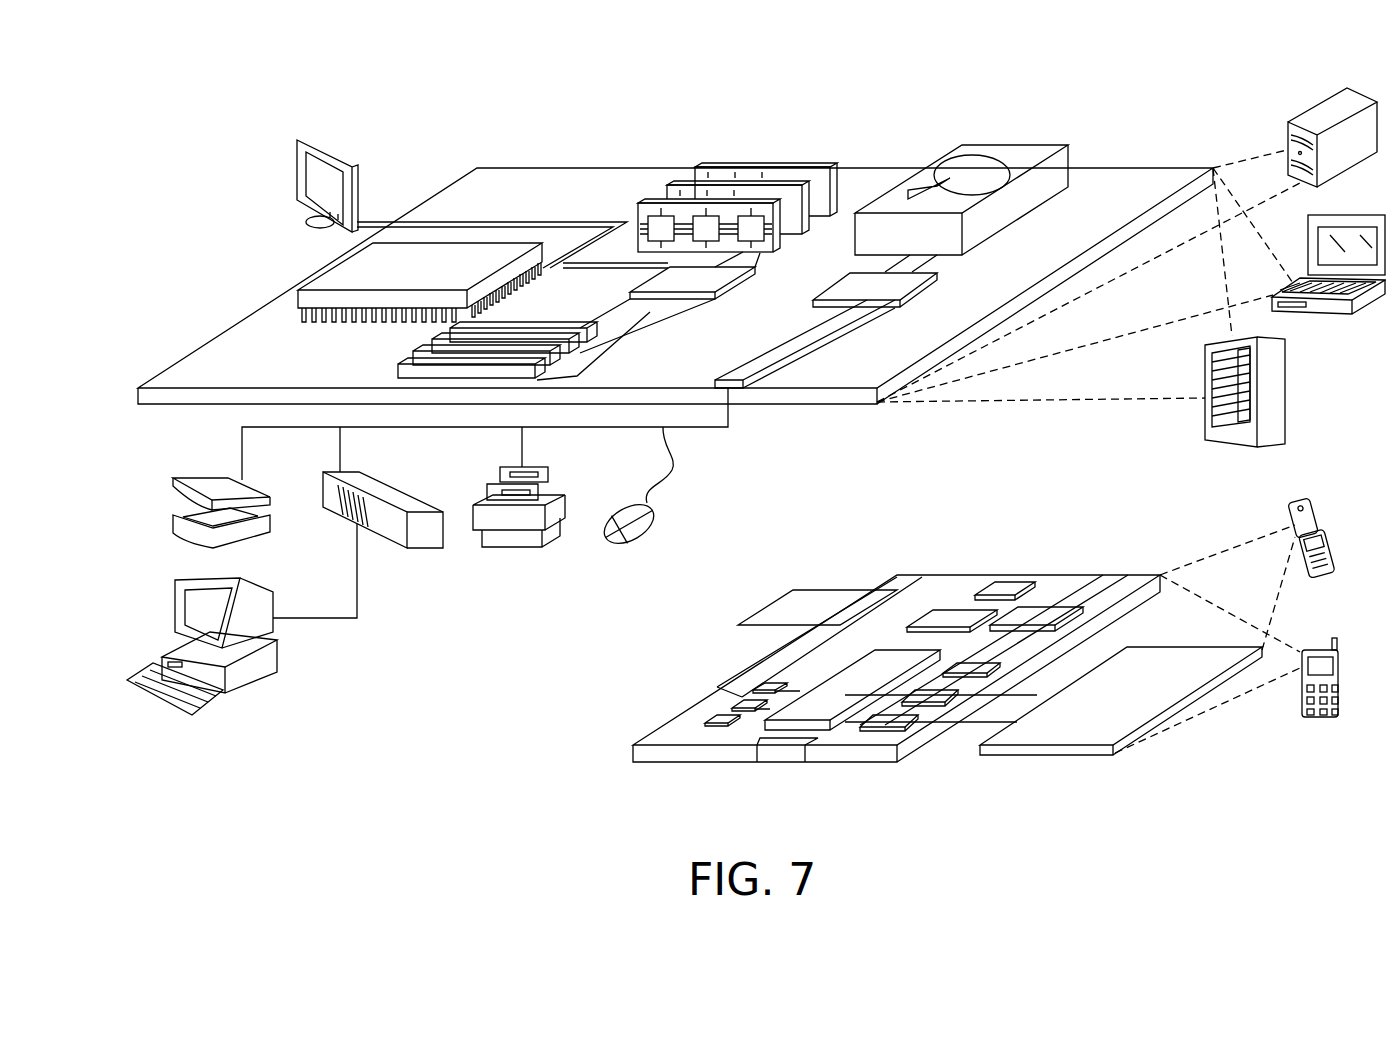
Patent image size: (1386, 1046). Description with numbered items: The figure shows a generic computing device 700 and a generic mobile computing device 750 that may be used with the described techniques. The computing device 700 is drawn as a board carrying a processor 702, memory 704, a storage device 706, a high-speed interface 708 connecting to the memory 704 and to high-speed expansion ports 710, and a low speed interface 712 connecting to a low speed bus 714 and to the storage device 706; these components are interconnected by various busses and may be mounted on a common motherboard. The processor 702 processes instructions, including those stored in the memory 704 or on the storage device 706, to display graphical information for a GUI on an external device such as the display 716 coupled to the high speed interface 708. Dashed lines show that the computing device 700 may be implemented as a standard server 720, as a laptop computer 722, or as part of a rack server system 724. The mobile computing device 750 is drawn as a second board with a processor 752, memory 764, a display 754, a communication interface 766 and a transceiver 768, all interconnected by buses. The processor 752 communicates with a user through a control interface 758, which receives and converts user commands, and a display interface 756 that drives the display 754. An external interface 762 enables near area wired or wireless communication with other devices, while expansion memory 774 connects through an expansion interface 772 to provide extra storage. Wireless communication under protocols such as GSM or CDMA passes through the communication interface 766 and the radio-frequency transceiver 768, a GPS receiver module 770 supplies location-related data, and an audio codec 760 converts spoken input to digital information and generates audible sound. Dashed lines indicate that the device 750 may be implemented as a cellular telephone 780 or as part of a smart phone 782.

The computing device 700 is at (432, 120).
The processor 702 is at (325, 274).
The memory 704 is at (772, 160).
The storage device 706 is at (1003, 146).
The high-speed interface 708 is at (705, 276).
The high-speed expansion ports 710 is at (425, 351).
The low speed interface 712 is at (845, 284).
The low speed bus 714 is at (735, 379).
The display 716 is at (298, 136).
The standard server 720 is at (1310, 113).
The laptop computer 722 is at (1365, 216).
The rack server system 724 is at (1285, 392).
The mobile computing device 750 is at (592, 767).
The processor 752 is at (820, 696).
The display 754 is at (1160, 660).
The display interface 756 is at (910, 721).
The control interface 758 is at (937, 693).
The audio codec 760 is at (977, 665).
The external interface 762 is at (783, 748).
The memory 764 is at (735, 703).
The communication interface 766 is at (953, 608).
The transceiver 768 is at (1045, 608).
The GPS receiver module 770 is at (1007, 583).
The expansion interface 772 is at (877, 587).
The expansion memory 774 is at (793, 590).
The cellular telephone 780 is at (1305, 500).
The smart phone 782 is at (1317, 650).